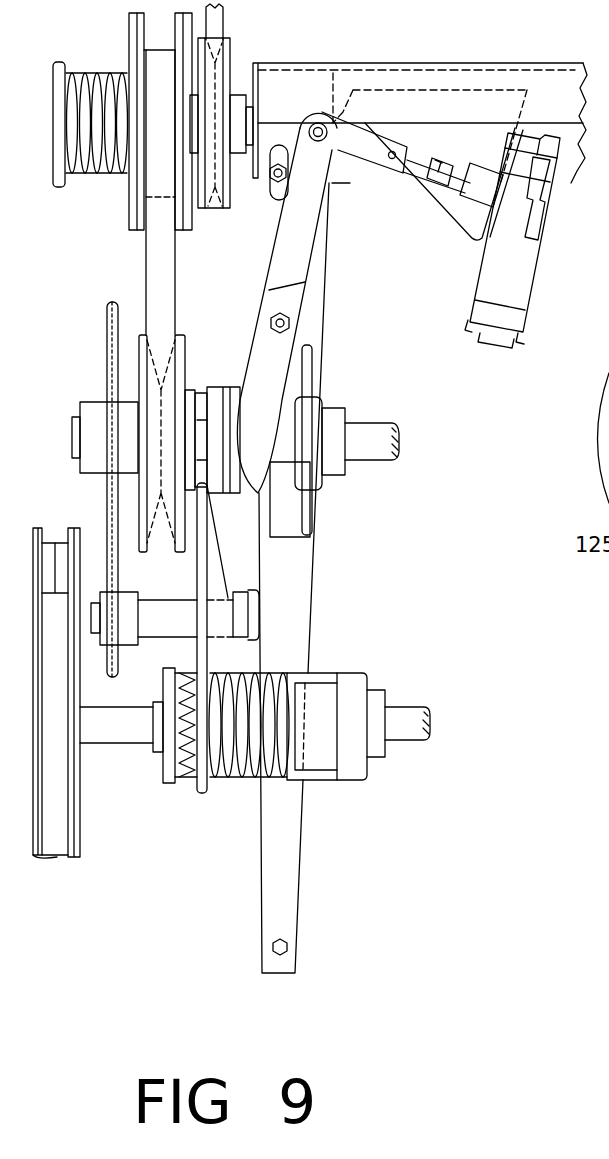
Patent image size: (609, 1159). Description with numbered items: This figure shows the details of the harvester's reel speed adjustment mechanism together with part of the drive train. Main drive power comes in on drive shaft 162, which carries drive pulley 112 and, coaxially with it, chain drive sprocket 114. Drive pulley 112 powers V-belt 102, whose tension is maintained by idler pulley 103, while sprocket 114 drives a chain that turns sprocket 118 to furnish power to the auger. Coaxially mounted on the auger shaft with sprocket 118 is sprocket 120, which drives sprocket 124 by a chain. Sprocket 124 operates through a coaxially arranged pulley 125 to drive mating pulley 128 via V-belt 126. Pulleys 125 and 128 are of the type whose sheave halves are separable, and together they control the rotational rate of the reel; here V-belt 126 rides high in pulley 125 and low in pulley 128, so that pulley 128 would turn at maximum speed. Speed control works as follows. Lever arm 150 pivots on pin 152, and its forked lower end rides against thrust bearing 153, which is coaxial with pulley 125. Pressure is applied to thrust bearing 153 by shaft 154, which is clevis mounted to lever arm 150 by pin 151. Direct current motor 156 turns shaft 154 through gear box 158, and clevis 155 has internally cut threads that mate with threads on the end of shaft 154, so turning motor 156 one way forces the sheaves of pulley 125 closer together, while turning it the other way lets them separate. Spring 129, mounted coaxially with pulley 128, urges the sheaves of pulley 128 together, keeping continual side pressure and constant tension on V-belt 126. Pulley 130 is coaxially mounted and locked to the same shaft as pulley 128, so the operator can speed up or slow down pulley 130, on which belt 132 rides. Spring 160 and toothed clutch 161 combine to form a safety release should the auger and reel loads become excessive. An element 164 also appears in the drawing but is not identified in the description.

The V-belt 102 is at (57, 857).
The idler pulley 103 is at (42, 528).
The drive pulley 112 is at (80, 797).
The chain drive sprocket 114 is at (195, 793).
The sprocket 118 is at (222, 548).
The sprocket 120 is at (125, 650).
The sprocket 124 is at (107, 335).
The pulley 125 is at (185, 345).
The V-belt 126 is at (175, 283).
The mating pulley 128 is at (129, 203).
The spring 129 is at (118, 73).
The pulley 130 is at (233, 52).
The belt 132 is at (225, 20).
The lever arm 150 is at (315, 272).
The pin 151 is at (322, 112).
The pin 152 is at (293, 323).
The thrust bearing 153 is at (217, 390).
The shaft 154 is at (452, 185).
The clevis 155 is at (400, 134).
The direct current motor 156 is at (535, 293).
The gear box 158 is at (552, 200).
The spring 160 is at (253, 777).
The toothed clutch 161 is at (182, 780).
The drive shaft 162 is at (400, 707).
The shaft 164 is at (362, 423).